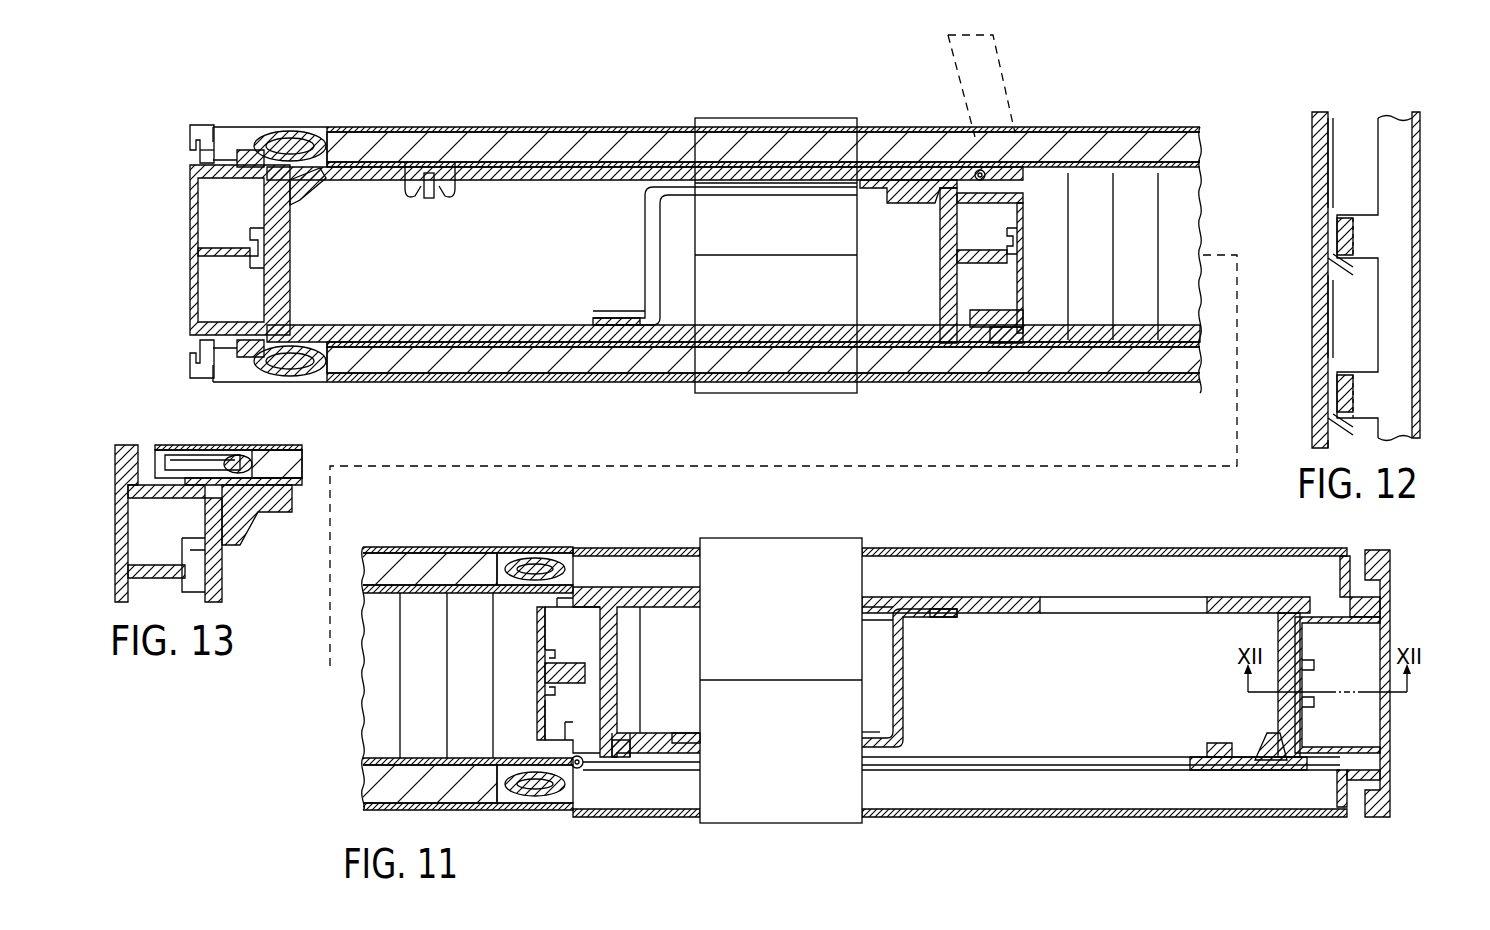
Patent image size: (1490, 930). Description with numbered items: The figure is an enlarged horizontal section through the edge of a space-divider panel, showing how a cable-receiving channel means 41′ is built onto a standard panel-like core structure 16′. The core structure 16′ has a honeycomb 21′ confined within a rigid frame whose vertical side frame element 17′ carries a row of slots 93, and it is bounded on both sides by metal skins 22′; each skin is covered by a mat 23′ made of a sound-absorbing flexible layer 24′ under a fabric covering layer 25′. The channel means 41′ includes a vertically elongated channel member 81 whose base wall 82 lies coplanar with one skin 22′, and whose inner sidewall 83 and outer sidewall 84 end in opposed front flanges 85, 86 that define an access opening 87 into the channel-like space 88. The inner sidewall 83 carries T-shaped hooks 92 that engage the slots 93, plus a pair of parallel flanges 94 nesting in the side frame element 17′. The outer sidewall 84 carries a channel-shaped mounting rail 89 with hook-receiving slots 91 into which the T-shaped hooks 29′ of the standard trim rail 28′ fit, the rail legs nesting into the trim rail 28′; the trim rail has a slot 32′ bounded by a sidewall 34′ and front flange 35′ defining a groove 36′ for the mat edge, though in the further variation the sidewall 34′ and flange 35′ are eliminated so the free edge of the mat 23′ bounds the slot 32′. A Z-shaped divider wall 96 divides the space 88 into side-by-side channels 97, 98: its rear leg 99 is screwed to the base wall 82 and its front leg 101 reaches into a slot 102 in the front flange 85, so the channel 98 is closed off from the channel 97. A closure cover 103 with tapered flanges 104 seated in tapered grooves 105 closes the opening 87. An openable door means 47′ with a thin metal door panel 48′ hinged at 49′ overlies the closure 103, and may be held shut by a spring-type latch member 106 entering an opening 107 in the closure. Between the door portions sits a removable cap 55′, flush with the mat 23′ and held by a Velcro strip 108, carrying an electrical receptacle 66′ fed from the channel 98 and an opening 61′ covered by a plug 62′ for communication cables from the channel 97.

In FIG. 11, the panel-like core structure 16′ is at (1195, 191).
In FIG. 11, the side frame element 17′ is at (1020, 305).
In FIG. 11, the honeycomb 21′ is at (1185, 245).
In FIG. 11, the skins 22′ is at (1130, 160).
In FIG. 11, the mat 23′ is at (666, 390).
In FIG. 11, the flexible layer 24′ is at (795, 140).
In FIG. 11, the fabric covering layer 25′ is at (748, 130).
In FIG. 11, the trim rail 28′ is at (193, 282).
In FIG. 12, the trim rail 28′ is at (1420, 325).
In FIG. 11, the T-shaped hooks 29′ is at (228, 240).
In FIG. 12, the T-shaped hooks 29′ is at (1395, 250).
In FIG. 11, the slot 32′ is at (220, 372).
In FIG. 11, the sidewall 34′ is at (221, 125).
In FIG. 11, the front flange 35′ is at (242, 128).
In FIG. 11, the groove 36′ is at (205, 152).
In FIG. 11, the cable-receiving channel means 41′ is at (578, 353).
In FIG. 11, the door means 47′ is at (562, 124).
In FIG. 11, the door panel 48′ is at (688, 186).
In FIG. 11, the hinge 49′ is at (984, 180).
In FIG. 11, the cap 55′ is at (980, 820).
In FIG. 11, the opening 61′ is at (1042, 818).
In FIG. 11, the removable door or plug 62′ is at (1080, 818).
In FIG. 11, the electrical receptacle 66′ is at (768, 790).
In FIG. 11, the channel member 81 is at (447, 352).
In FIG. 11, the base wall 82 is at (545, 323).
In FIG. 11, the inner sidewall 83 is at (615, 650).
In FIG. 11, the outer sidewall 84 is at (1280, 632).
In FIG. 12, the outer sidewall 84 is at (1320, 262).
In FIG. 11, the front flange 85 is at (665, 735).
In FIG. 11, the front flange 86 is at (1256, 740).
In FIG. 11, the access opening 87 is at (1207, 745).
In FIG. 11, the channel-like space 88 is at (467, 300).
In FIG. 11, the mounting rail 89 is at (1352, 628).
In FIG. 11, the hook-receiving slots 91 is at (1017, 248).
In FIG. 12, the hook-receiving slots 91 is at (1345, 215).
In FIG. 11, the hooks 92 is at (575, 672).
In FIG. 11, the slots 93 is at (535, 707).
In FIG. 11, the flanges 94 is at (557, 598).
In FIG. 11, the divider wall 96 is at (905, 678).
In FIG. 11, the channel 97 is at (360, 300).
In FIG. 11, the channel 98 is at (895, 298).
In FIG. 11, the rear leg 99 is at (960, 609).
In FIG. 11, the front leg 101 is at (872, 745).
In FIG. 11, the slot 102 is at (692, 743).
In FIG. 11, the closure cover 103 is at (745, 182).
In FIG. 11, the tapered flanges 104 is at (935, 203).
In FIG. 11, the tapered grooves 105 is at (625, 745).
In FIG. 11, the spring-type latch member 106 is at (445, 200).
In FIG. 11, the opening 107 is at (410, 195).
In FIG. 11, the Velcro strip 108 is at (573, 562).